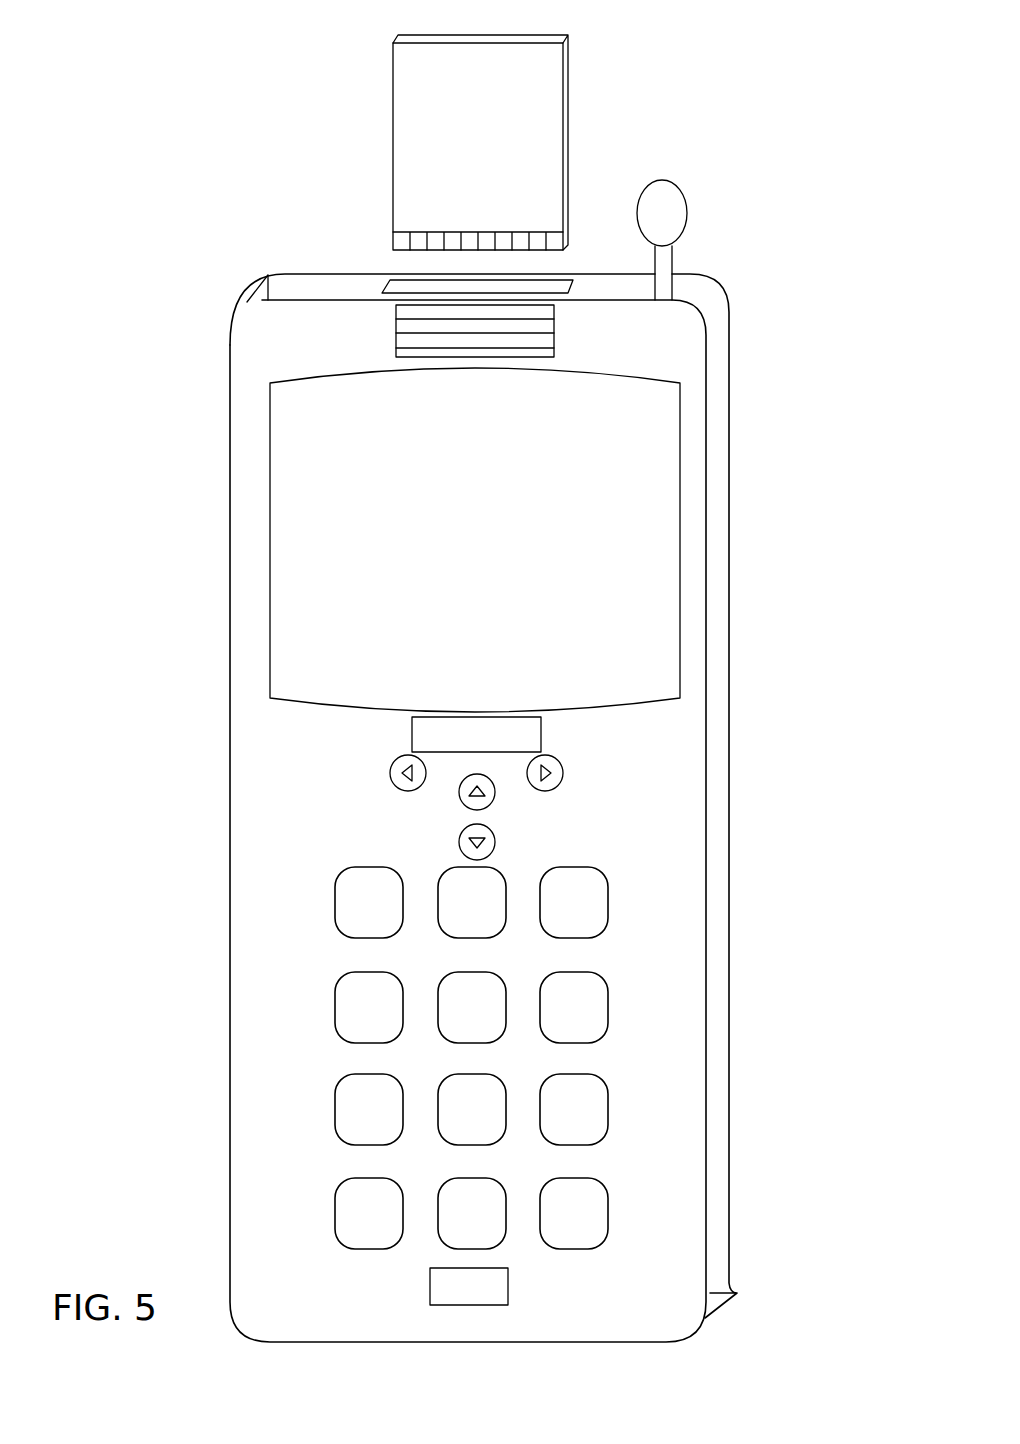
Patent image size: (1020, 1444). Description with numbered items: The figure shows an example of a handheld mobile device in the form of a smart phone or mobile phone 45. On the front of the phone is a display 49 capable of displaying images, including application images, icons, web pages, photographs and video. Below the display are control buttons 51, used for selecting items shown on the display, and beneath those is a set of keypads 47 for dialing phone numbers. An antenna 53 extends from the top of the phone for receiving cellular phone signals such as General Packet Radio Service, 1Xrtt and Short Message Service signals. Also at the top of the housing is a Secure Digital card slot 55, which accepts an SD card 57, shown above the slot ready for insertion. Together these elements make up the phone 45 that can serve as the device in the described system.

The mobile phone 45 is at (224, 340).
The keypads 47 is at (628, 910).
The display 49 is at (680, 540).
The control buttons 51 is at (425, 800).
The antenna 53 is at (690, 221).
The Secure Digital card slot 55 is at (420, 287).
The SD card 57 is at (572, 103).